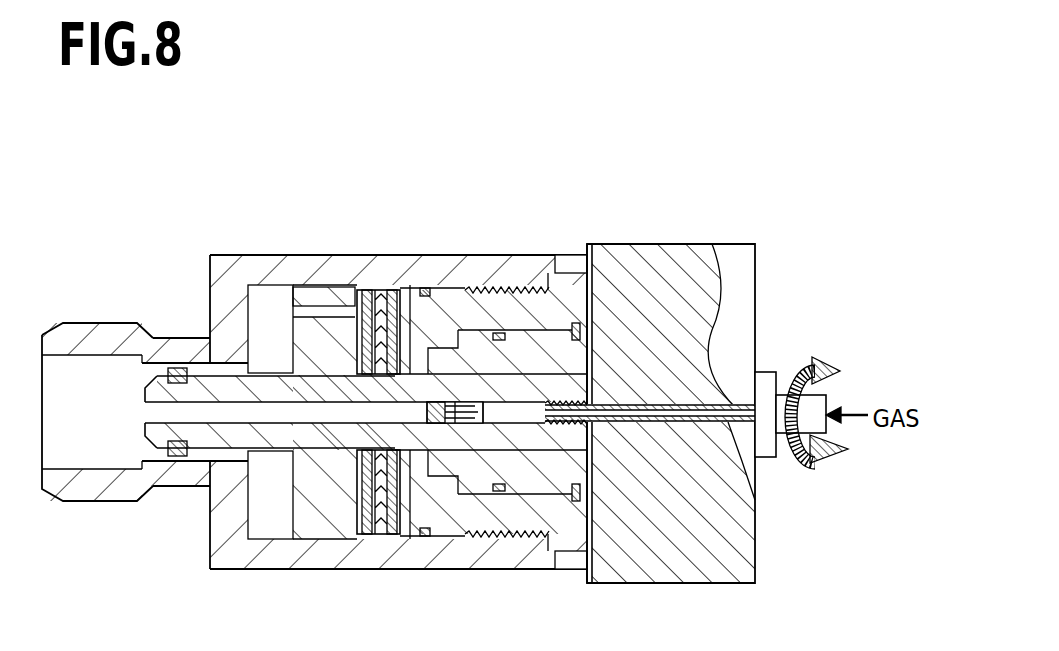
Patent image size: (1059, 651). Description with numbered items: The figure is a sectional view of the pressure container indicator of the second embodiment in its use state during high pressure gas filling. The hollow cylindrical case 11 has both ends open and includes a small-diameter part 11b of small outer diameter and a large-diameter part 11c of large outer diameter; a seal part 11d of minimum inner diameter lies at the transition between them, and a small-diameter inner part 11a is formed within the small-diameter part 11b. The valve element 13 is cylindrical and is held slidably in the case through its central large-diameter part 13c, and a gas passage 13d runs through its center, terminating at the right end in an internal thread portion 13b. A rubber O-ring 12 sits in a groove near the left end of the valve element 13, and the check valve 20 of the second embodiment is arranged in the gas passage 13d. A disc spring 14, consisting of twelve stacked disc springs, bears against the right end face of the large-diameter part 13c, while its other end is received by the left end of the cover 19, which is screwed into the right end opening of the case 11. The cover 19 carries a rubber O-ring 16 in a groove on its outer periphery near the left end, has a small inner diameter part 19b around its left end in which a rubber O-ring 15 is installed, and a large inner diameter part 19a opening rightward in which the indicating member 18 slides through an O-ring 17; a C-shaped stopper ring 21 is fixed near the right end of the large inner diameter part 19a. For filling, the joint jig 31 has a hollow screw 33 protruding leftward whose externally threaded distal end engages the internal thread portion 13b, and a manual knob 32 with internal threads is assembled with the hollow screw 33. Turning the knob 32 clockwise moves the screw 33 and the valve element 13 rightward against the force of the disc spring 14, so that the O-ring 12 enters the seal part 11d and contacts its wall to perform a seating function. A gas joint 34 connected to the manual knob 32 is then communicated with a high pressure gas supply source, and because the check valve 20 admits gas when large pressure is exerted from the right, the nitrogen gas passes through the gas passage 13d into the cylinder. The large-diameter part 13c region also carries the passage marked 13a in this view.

The case 11 is at (65, 323).
The small-diameter inner part 11a is at (98, 356).
The small-diameter part 11b is at (102, 330).
The large-diameter part 11c is at (305, 262).
The seal part 11d is at (187, 457).
The O-ring 12 is at (168, 368).
The valve element 13 is at (235, 377).
The inner body portion 13a is at (300, 312).
The internal thread portion 13b is at (598, 390).
The large-diameter part 13c is at (327, 530).
The gas passage 13d is at (150, 418).
The disc spring 14 is at (383, 292).
The O-ring 15 is at (418, 300).
The O-ring 16 is at (425, 288).
The O-ring 17 is at (498, 333).
The indicating member 18 is at (523, 347).
The cover 19 is at (578, 257).
The large inner diameter part 19a is at (596, 350).
The small inner diameter part 19b is at (462, 335).
The check valve 20 is at (490, 428).
The stopper ring 21 is at (597, 333).
The joint jig 31 is at (688, 250).
The manual knob 32 is at (768, 372).
The hollow screw 33 is at (598, 427).
The gas joint 34 is at (828, 396).